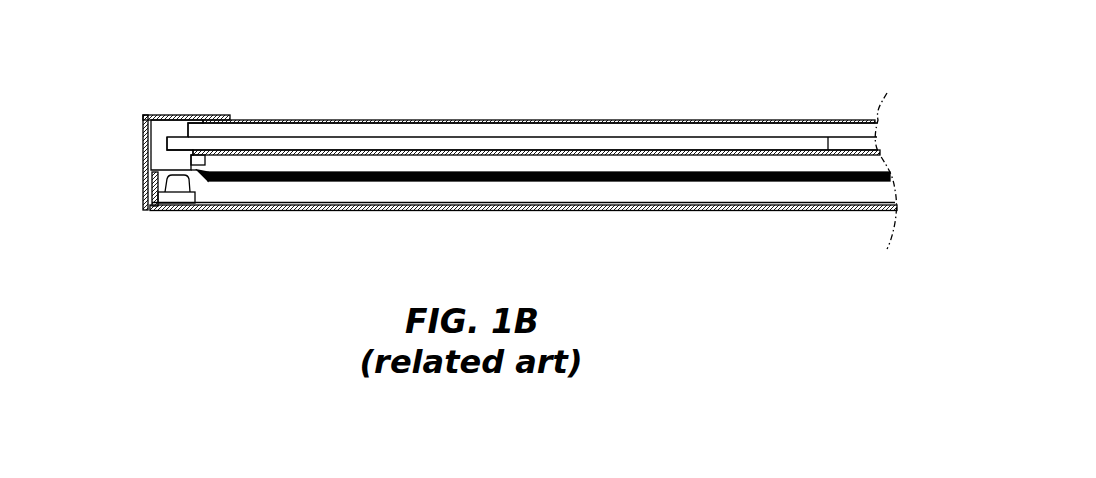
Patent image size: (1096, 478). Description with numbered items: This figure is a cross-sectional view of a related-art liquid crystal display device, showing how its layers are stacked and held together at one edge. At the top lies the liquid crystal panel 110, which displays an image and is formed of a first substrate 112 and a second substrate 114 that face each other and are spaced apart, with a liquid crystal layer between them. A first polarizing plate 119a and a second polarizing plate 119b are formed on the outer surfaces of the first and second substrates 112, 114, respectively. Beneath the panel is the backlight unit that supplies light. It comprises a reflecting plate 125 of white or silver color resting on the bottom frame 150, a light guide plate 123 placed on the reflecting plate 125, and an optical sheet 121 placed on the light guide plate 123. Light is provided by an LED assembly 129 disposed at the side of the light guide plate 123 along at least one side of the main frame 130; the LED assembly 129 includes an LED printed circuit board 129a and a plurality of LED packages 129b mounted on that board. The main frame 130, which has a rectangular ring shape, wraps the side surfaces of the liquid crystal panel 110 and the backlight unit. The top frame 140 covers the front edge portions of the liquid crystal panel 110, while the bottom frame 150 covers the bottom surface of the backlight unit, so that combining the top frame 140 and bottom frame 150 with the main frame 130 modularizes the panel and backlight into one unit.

The liquid crystal panel 110 is at (603, 38).
The first substrate 112 is at (637, 143).
The second substrate 114 is at (583, 132).
The first polarizing plate 119a is at (828, 137).
The second polarizing plate 119b is at (783, 118).
The optical sheet 121 is at (255, 182).
The light guide plate 123 is at (397, 187).
The reflecting plate 125 is at (338, 203).
The LED assembly 129 is at (188, 266).
The LED printed circuit board 129a is at (185, 187).
The LED package 129b is at (168, 196).
The main frame 130 is at (153, 153).
The top frame 140 is at (183, 115).
The bottom frame 150 is at (295, 210).